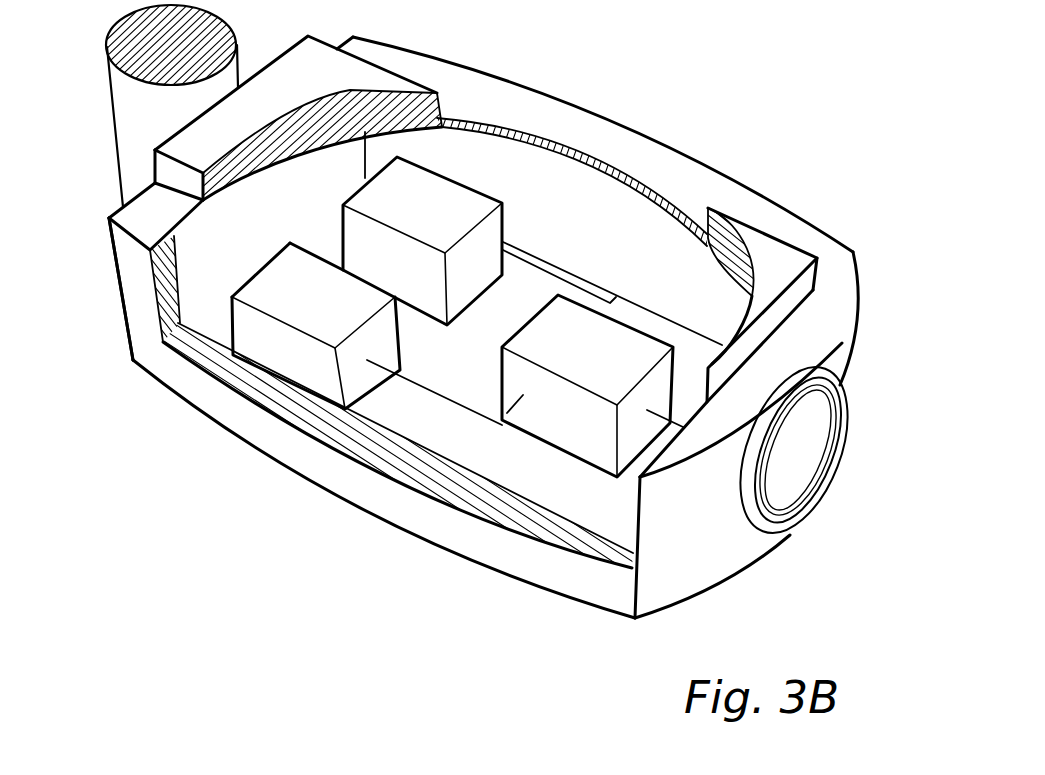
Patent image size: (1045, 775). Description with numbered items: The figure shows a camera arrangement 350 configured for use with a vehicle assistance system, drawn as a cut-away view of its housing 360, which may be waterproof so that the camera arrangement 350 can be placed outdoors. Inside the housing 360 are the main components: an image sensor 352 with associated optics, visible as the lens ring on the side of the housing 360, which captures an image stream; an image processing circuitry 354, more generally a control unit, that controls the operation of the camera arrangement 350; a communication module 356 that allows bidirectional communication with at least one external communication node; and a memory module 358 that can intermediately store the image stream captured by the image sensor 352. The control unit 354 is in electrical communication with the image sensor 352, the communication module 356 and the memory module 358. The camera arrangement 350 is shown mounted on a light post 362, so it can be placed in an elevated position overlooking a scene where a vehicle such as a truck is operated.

The camera arrangement 350 is at (772, 116).
The image sensor 352 is at (793, 461).
The image processing circuitry 354 is at (563, 408).
The communication module 356 is at (303, 357).
The memory module 358 is at (477, 207).
The housing 360 is at (137, 313).
The light post 362 is at (130, 112).